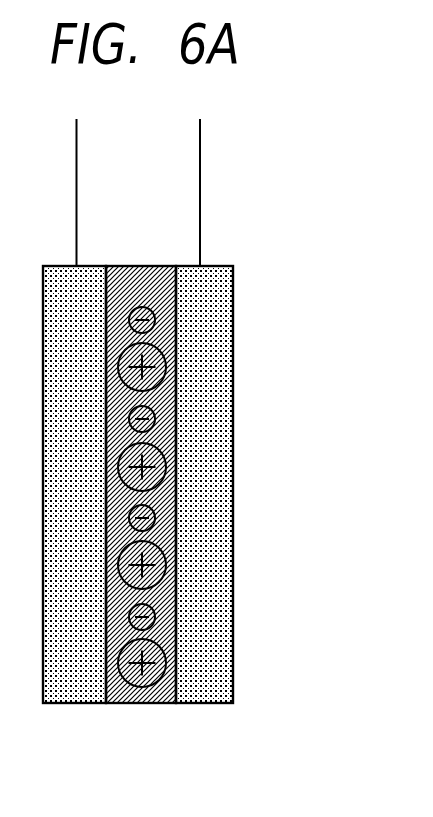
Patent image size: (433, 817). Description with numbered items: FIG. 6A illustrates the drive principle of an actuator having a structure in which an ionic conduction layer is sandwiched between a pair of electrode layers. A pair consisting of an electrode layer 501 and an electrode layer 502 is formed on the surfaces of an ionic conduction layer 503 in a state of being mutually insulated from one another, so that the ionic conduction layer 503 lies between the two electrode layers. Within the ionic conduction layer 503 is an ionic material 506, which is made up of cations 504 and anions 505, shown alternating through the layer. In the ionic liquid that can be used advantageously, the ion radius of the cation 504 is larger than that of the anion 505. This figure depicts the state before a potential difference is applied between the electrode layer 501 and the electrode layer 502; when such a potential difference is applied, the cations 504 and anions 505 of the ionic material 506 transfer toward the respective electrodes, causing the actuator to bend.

The electrode layer 501 is at (67, 693).
The electrode layer 502 is at (212, 693).
The ionic conduction layer 503 is at (142, 693).
The cation 504 is at (162, 677).
The anion 505 is at (152, 622).
The ionic material 506 is at (245, 497).